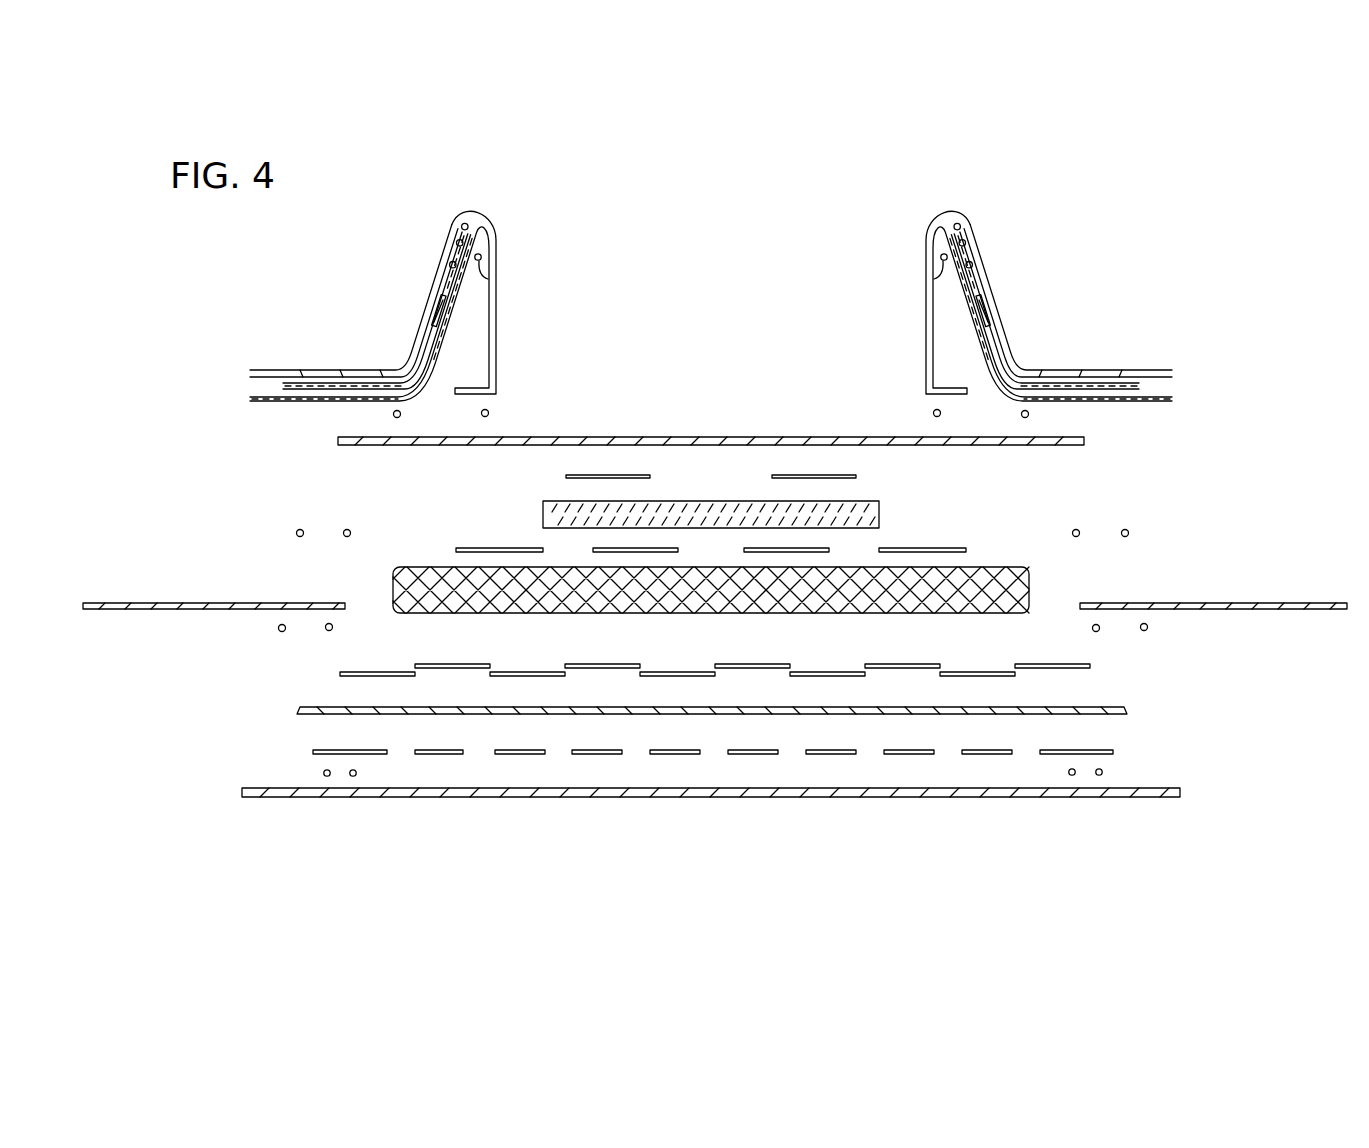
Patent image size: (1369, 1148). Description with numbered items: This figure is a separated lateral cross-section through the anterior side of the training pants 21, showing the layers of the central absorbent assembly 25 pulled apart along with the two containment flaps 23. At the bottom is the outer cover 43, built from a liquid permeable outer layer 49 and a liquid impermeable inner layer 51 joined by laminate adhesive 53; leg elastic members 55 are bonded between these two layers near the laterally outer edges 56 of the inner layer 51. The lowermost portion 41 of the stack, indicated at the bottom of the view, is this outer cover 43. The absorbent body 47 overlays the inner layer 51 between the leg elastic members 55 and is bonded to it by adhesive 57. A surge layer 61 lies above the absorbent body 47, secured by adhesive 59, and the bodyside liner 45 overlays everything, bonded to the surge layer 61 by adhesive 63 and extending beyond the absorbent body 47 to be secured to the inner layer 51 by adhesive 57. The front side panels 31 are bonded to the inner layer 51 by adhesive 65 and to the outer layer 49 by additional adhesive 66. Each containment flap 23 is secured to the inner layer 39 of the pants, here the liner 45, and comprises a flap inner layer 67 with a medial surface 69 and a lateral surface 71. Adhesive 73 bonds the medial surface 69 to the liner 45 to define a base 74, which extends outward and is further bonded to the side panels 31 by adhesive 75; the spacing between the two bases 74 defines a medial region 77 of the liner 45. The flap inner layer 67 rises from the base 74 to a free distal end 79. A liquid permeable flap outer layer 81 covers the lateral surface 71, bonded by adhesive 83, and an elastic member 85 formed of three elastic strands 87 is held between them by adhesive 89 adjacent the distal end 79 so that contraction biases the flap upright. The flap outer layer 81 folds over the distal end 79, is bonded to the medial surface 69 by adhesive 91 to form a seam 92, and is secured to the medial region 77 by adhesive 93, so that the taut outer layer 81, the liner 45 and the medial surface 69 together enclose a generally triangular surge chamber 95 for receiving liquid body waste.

The training pants 21 is at (690, 285).
The containment flap 23 is at (375, 318).
The central absorbent assembly 25 is at (829, 230).
The front side panels 31 is at (185, 603).
The inner layer 39 is at (757, 426).
The lower assembly 41 is at (637, 814).
The outer cover 43 is at (753, 770).
The bodyside liner 45 is at (385, 447).
The absorbent body 47 is at (392, 590).
The outer layer 49 is at (495, 797).
The inner layer 51 is at (870, 715).
The laminate adhesive 53 is at (748, 755).
The leg elastic members 55 is at (353, 777).
The laterally outer edges 56 is at (298, 710).
The adhesive 57 is at (370, 675).
The adhesive 59 is at (945, 548).
The surge layer 61 is at (543, 512).
The adhesive 63 is at (845, 476).
The adhesive 65 is at (329, 631).
The additional adhesive 66 is at (278, 628).
The flap inner layer 67 is at (270, 404).
The medial surface 69 is at (453, 315).
The lateral surface 71 is at (424, 333).
The adhesive 73 is at (393, 414).
The base 74 is at (414, 424).
The adhesive 75 is at (345, 529).
The medial region 77 is at (665, 437).
The distal end 79 is at (512, 228).
The flap outer layer 81 is at (436, 275).
The adhesive 83 is at (298, 383).
The elastic member 85 is at (452, 220).
The elastic strands 87 is at (462, 222).
The adhesive 89 is at (470, 213).
The adhesive 91 is at (482, 261).
The seam 92 is at (497, 260).
The adhesive 93 is at (489, 413).
The surge chamber 95 is at (470, 362).